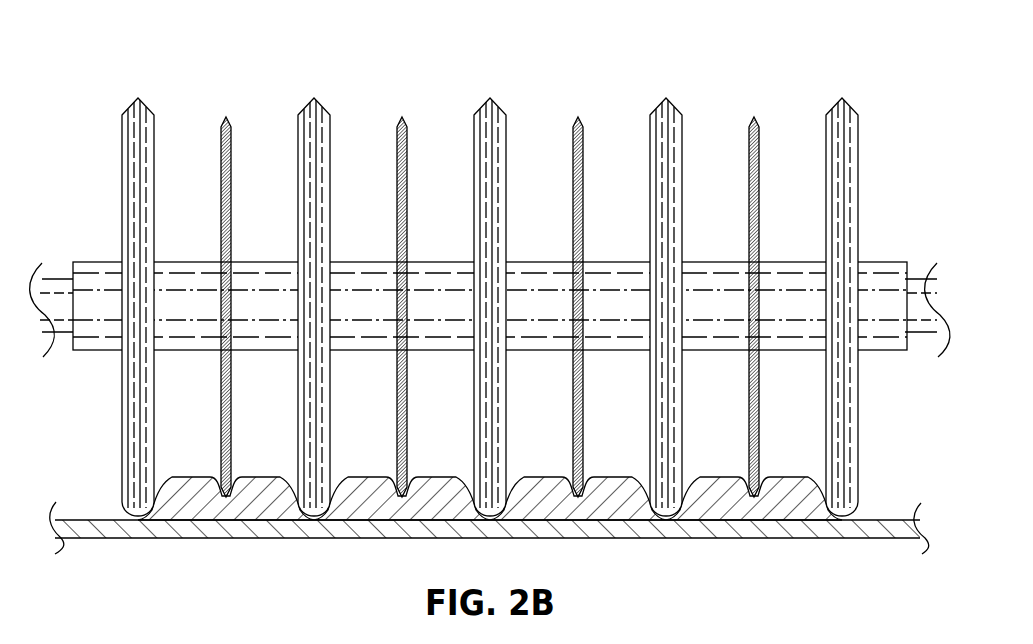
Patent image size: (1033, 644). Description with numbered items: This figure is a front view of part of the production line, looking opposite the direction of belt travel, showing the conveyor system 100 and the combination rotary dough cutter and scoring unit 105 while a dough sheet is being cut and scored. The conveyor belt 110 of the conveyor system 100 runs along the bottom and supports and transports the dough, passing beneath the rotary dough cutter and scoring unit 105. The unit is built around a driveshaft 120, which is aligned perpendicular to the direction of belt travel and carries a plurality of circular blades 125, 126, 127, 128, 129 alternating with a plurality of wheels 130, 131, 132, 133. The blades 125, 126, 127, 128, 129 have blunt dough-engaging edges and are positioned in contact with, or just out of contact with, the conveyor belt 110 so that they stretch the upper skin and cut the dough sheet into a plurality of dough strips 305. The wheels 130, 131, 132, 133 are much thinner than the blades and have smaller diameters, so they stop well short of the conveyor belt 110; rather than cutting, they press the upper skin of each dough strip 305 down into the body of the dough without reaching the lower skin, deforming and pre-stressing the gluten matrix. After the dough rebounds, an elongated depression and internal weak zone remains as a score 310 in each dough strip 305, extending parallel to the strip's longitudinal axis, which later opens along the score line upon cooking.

The conveyor system 100 is at (490, 325).
The rotary dough cutter and scoring unit 105 is at (518, 271).
The conveyor belt 110 is at (198, 539).
The driveshaft 120 is at (88, 262).
The circular blade 125 is at (138, 98).
The circular blade 126 is at (314, 98).
The circular blade 127 is at (490, 98).
The circular blade 128 is at (666, 98).
The circular blade 129 is at (842, 98).
The wheel 130 is at (226, 117).
The wheel 131 is at (402, 117).
The wheel 132 is at (578, 117).
The wheel 133 is at (754, 117).
The dough strip 305 is at (490, 537).
The score 310 is at (392, 498).